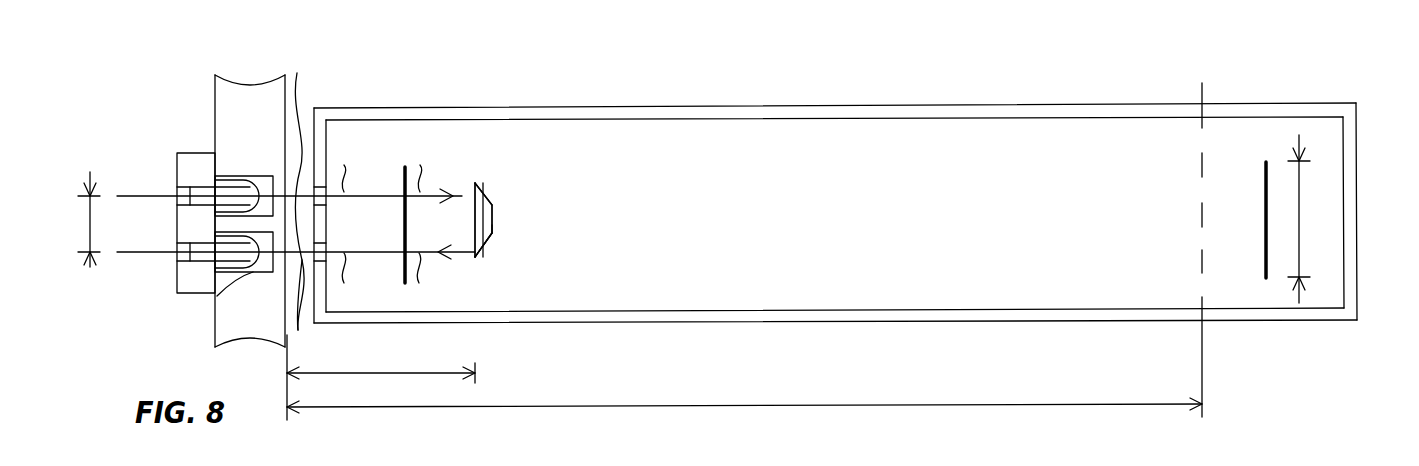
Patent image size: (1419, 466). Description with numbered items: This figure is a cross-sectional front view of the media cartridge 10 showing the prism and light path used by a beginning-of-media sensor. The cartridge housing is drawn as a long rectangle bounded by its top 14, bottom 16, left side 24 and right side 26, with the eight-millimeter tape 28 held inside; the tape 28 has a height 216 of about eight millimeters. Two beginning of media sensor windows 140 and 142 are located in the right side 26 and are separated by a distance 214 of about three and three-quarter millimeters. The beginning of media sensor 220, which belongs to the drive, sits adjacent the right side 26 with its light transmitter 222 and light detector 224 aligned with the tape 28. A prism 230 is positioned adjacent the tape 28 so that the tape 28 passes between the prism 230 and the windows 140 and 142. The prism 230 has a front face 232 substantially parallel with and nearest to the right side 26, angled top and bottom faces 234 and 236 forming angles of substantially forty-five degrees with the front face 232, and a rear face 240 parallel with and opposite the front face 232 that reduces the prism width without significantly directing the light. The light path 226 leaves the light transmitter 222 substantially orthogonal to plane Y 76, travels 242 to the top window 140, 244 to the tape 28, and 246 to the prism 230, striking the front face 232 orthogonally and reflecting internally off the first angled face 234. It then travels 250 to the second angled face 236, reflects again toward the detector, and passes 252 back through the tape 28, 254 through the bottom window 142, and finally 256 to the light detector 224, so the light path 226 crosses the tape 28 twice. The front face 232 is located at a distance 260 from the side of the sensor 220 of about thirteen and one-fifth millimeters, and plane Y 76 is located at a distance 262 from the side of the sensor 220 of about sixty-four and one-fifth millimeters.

The media cartridge 10 is at (605, 88).
The top 14 is at (718, 107).
The bottom 16 is at (718, 323).
The left side 24 is at (1357, 210).
The right side 26 is at (313, 128).
The 8 mm tape 28 is at (405, 178).
The plane Y 76 is at (1203, 393).
The beginning of media sensor window 140 is at (327, 205).
The beginning of media sensor window 142 is at (328, 243).
The distance 214 is at (88, 266).
The height 216 is at (1299, 136).
The beginning of media sensor 220 is at (264, 300).
The light transmitter 222 is at (253, 176).
The light detector 224 is at (217, 296).
The light path 226 is at (470, 154).
The prism 230 is at (493, 212).
The front face 232 is at (475, 226).
The angled top face 234 is at (479, 186).
The angled bottom face 236 is at (479, 254).
The rear face 240 is at (494, 233).
The light path segment to top window 242 is at (313, 189).
The light path segment to tape 244 is at (348, 163).
The light path segment to prism 246 is at (423, 163).
The light path segment to second angled face 250 is at (493, 220).
The light path segment to tape 252 is at (425, 283).
The light path segment to bottom window 254 is at (348, 283).
The light path segment to light detector 256 is at (315, 309).
The distance 260 is at (368, 373).
The distance 262 is at (870, 407).